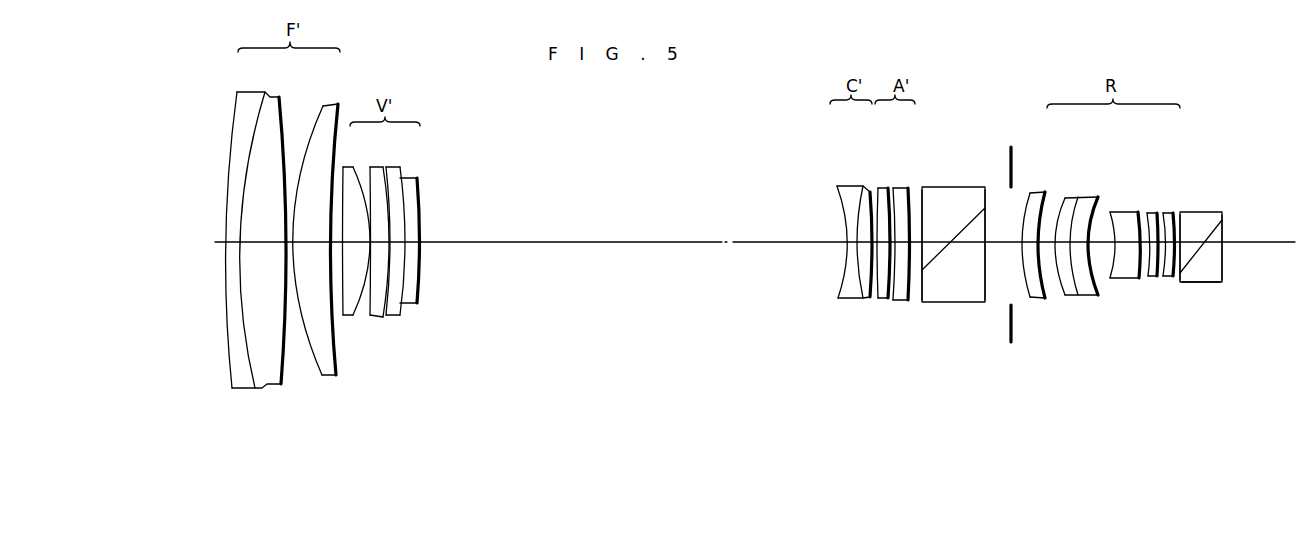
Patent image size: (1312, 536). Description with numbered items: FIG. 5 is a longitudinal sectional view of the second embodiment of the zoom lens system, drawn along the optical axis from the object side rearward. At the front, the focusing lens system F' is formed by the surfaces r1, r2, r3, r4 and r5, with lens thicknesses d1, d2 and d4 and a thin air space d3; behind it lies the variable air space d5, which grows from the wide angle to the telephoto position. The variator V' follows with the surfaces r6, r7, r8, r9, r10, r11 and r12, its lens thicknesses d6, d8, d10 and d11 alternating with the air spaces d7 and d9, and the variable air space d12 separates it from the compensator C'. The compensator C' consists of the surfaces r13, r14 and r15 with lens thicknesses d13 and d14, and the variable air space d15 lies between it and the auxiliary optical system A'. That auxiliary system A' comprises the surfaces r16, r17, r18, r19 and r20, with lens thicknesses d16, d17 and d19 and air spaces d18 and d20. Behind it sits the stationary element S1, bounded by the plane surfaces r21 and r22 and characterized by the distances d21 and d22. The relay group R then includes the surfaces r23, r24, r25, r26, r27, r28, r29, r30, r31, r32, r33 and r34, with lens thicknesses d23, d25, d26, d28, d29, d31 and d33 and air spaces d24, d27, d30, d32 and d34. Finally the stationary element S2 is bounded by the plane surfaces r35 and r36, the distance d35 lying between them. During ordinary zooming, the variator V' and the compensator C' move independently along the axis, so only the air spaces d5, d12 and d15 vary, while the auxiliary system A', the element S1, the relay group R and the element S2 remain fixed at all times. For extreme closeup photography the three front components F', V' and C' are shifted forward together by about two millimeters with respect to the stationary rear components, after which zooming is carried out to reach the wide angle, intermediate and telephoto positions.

The first lens element thickness d1 is at (229, 238).
The second lens element thickness d2 is at (250, 238).
The air space d3 is at (284, 238).
The third lens element thickness d4 is at (300, 238).
The variable air space d5 is at (334, 238).
The lens element thickness d6 is at (340, 246).
The air space d7 is at (370, 170).
The lens element thickness d8 is at (378, 222).
The air space d9 is at (381, 236).
The lens element thickness d10 is at (408, 238).
The lens element thickness d11 is at (409, 262).
The variable air space d12 is at (577, 243).
The lens element thickness d13 is at (850, 240).
The lens element thickness d14 is at (848, 230).
The variable air space d15 is at (865, 230).
The lens element thickness d16 is at (876, 230).
The lens element thickness d17 is at (894, 230).
The air space d18 is at (913, 230).
The lens element thickness d19 is at (915, 236).
The air space d20 is at (922, 252).
The axial distance d21 is at (929, 249).
The glass block thickness d22 is at (1000, 242).
The lens element thickness d23 is at (1034, 226).
The air space d24 is at (1050, 242).
The lens element thickness d25 is at (1070, 242).
The lens element thickness d26 is at (1083, 242).
The air space d27 is at (1097, 242).
The lens element thickness d28 is at (1118, 242).
The lens element thickness d29 is at (1140, 242).
The air space d30 is at (1153, 242).
The lens element thickness d31 is at (1166, 242).
The air space d32 is at (1200, 237).
The lens element thickness d33 is at (1193, 242).
The air space d34 is at (1207, 245).
The axial distance d35 is at (1217, 253).
The first surface radius of curvature r1 is at (227, 340).
The second surface radius of curvature r2 is at (250, 360).
The third surface radius of curvature r3 is at (282, 386).
The fourth surface radius of curvature r4 is at (311, 358).
The fifth surface radius of curvature r5 is at (338, 377).
The sixth surface radius of curvature r6 is at (342, 307).
The seventh surface radius of curvature r7 is at (351, 316).
The eighth surface radius of curvature r8 is at (369, 317).
The ninth surface radius of curvature r9 is at (383, 318).
The tenth surface radius of curvature r10 is at (396, 316).
The eleventh surface radius of curvature r11 is at (407, 316).
The twelfth surface radius of curvature r12 is at (419, 304).
The thirteenth surface radius of curvature r13 is at (842, 278).
The fourteenth surface radius of curvature r14 is at (858, 286).
The fifteenth surface radius of curvature r15 is at (862, 296).
The sixteenth surface radius of curvature r16 is at (868, 298).
The seventeenth surface radius of curvature r17 is at (877, 298).
The eighteenth surface radius of curvature r18 is at (893, 302).
The nineteenth surface radius of curvature r19 is at (899, 302).
The twentieth surface radius of curvature r20 is at (923, 298).
The twenty-first surface radius of curvature r21 is at (935, 303).
The twenty-second surface radius of curvature r22 is at (979, 305).
The twenty-third surface radius of curvature r23 is at (1028, 296).
The twenty-fourth surface radius of curvature r24 is at (1045, 300).
The twenty-fifth surface radius of curvature r25 is at (1061, 296).
The twenty-sixth surface radius of curvature r26 is at (1072, 297).
The twenty-seventh surface radius of curvature r27 is at (1087, 296).
The twenty-eighth surface radius of curvature r28 is at (1109, 279).
The twenty-ninth surface radius of curvature r29 is at (1128, 279).
The thirtieth surface radius of curvature r30 is at (1148, 278).
The thirty-first surface radius of curvature r31 is at (1154, 278).
The thirty-second surface radius of curvature r32 is at (1167, 278).
The thirty-third surface radius of curvature r33 is at (1174, 278).
The thirty-fourth surface radius of curvature r34 is at (1192, 283).
The thirty-fifth surface radius of curvature r35 is at (1199, 283).
The thirty-sixth surface radius of curvature r36 is at (1220, 283).
The stationary optical element S1 is at (966, 186).
The stationary optical element S2 is at (1207, 212).